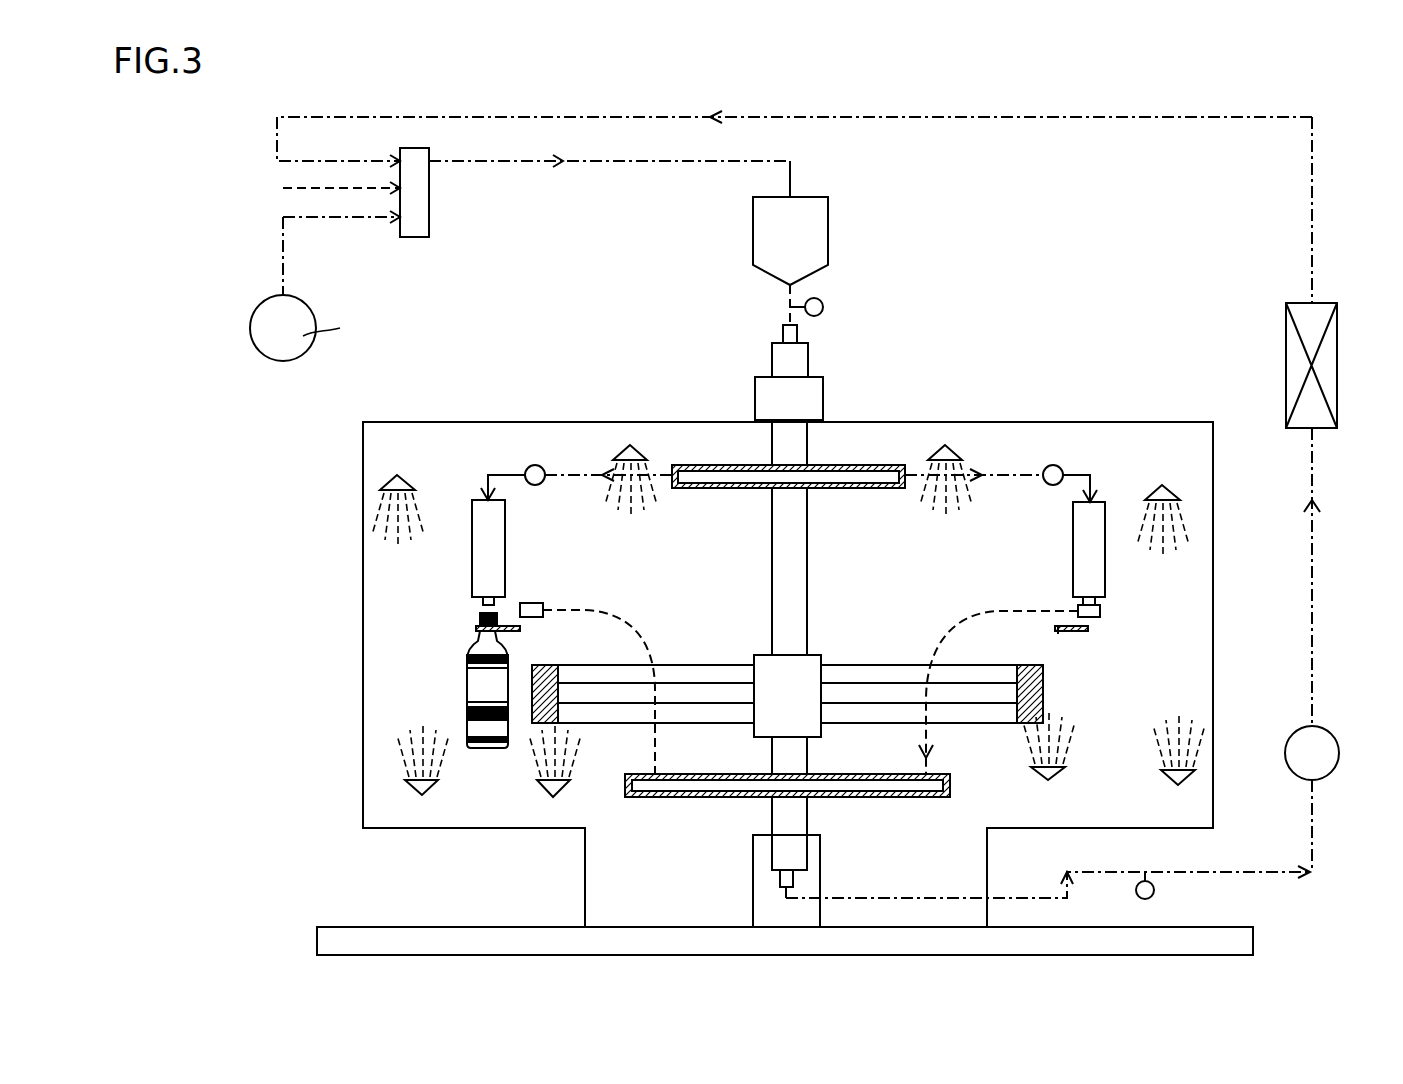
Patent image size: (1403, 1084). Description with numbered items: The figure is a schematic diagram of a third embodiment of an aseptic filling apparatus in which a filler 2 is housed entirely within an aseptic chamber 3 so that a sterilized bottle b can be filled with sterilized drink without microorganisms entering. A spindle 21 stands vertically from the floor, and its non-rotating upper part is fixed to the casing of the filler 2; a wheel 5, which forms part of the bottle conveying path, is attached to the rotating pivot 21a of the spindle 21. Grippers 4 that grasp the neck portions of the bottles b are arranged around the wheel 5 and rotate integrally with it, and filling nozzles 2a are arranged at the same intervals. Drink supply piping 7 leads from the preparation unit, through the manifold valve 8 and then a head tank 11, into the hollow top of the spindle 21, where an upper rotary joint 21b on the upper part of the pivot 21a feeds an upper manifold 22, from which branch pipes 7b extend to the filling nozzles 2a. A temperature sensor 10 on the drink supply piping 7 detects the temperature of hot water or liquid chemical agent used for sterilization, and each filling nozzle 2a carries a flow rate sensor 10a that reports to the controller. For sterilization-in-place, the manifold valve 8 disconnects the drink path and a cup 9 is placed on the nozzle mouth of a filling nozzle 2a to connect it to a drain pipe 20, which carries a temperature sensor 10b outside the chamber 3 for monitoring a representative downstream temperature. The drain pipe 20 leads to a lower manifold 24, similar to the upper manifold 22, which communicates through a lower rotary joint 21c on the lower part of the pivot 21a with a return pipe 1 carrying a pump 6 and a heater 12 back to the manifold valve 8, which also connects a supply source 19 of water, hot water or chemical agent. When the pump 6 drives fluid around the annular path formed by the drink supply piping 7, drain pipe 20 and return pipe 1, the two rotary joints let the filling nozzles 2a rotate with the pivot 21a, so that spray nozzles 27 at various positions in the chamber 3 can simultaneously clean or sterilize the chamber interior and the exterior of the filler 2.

The return pipe 1 is at (1312, 605).
The filler 2 is at (705, 398).
The filling nozzle 2a is at (472, 530).
The aseptic chamber 3 is at (363, 640).
The gripper 4 is at (504, 622).
The wheel 5 is at (1043, 700).
The pump 6 is at (1340, 755).
The drink supply piping 7 is at (613, 165).
The branch pipe 7b is at (565, 478).
The manifold valve 8 is at (415, 237).
The cup 9 is at (543, 605).
The temperature sensor 10 is at (824, 307).
The flow rate sensor 10a is at (530, 466).
The temperature sensor 10b is at (1156, 889).
The head tank 11 is at (828, 232).
The heater 12 is at (1337, 303).
The supply source 19 is at (285, 361).
The drain pipe 20 is at (630, 620).
The spindle 21 is at (753, 866).
The pivot 21a is at (807, 600).
The upper rotary joint 21b is at (823, 400).
The lower rotary joint 21c is at (800, 852).
The upper manifold 22 is at (848, 488).
The lower manifold 24 is at (950, 785).
The spray nozzle 27 is at (408, 478).
The bottle b is at (467, 693).